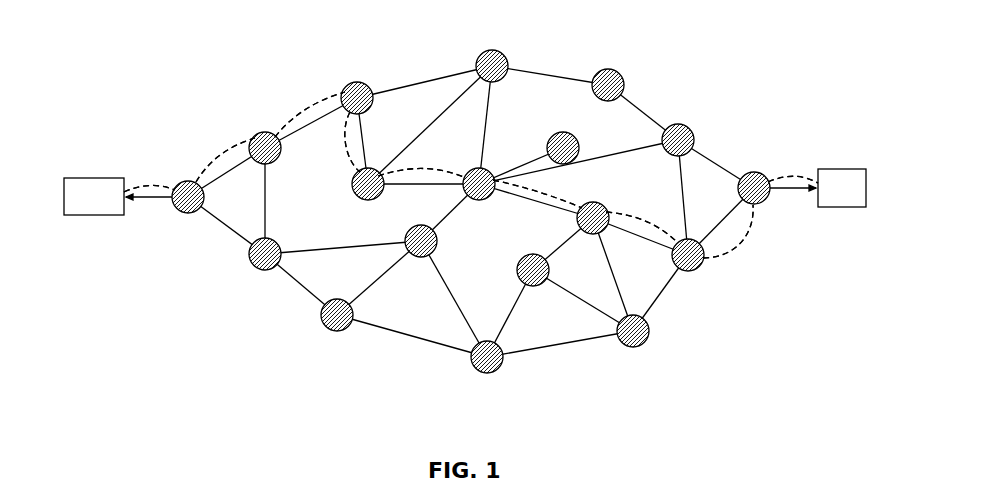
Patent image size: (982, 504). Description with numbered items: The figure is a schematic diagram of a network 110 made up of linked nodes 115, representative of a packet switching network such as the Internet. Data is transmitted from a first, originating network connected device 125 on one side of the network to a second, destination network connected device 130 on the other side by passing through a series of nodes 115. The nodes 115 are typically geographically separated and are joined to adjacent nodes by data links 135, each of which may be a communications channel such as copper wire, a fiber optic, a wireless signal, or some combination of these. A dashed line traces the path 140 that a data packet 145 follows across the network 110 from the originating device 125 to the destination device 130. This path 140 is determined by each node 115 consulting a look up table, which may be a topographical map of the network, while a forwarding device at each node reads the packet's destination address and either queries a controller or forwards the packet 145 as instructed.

The network 110 is at (611, 408).
The node 115 is at (340, 101).
The originating network connected device 125 is at (93, 217).
The destination network connected device 130 is at (842, 208).
The data link 135 is at (292, 285).
The path 140 is at (222, 163).
The data packet 145 is at (468, 175).